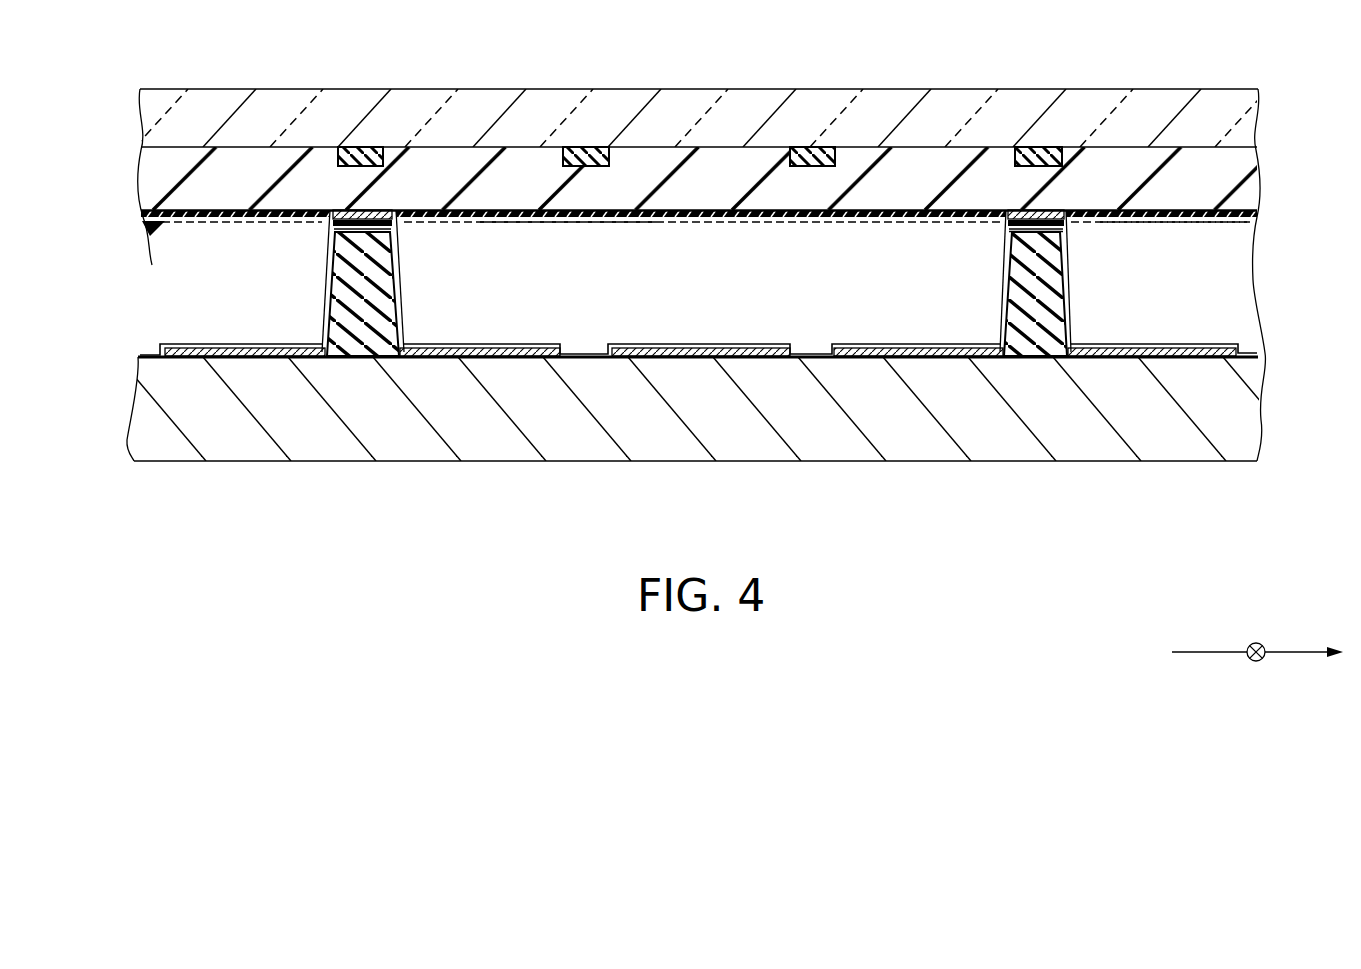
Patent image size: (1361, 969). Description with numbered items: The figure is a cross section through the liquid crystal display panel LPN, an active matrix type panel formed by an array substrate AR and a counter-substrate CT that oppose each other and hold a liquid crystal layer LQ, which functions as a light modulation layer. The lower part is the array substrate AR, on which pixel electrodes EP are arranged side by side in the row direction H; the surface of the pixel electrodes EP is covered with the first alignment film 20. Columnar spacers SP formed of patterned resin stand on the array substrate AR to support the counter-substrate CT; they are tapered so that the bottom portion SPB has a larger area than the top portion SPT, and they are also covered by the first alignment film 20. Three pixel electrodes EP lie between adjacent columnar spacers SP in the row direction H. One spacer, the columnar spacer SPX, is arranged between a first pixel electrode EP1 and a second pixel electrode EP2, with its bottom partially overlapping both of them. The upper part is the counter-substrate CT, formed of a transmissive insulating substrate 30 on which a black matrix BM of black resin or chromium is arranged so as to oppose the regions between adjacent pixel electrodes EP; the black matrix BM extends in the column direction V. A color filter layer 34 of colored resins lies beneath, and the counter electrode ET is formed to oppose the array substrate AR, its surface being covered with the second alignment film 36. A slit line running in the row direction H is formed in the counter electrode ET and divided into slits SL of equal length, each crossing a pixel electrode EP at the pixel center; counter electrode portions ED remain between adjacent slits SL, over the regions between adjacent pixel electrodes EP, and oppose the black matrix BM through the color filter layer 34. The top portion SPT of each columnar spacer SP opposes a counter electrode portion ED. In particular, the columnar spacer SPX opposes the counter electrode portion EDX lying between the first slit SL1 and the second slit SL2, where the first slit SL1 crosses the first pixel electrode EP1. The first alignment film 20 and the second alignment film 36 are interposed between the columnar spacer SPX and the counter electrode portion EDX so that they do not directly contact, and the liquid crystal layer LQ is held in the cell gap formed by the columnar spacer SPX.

The insulating substrate 30 is at (142, 113).
The color filter layer 34 is at (142, 175).
The second alignment film 36 is at (142, 213).
The first alignment film 20 is at (140, 357).
The black matrix BM is at (361, 148).
The top portion of columnar spacer SPT is at (1048, 228).
The bottom portion of columnar spacer SPB is at (1034, 359).
The counter-substrate CT is at (1266, 150).
The array substrate AR is at (1276, 405).
The counter electrode ET is at (148, 233).
The slit SL is at (218, 228).
The first slit SL1 is at (568, 226).
The second slit SL2 is at (1178, 224).
The pixel electrode EP is at (218, 346).
The first pixel electrode EP1 is at (857, 346).
The second pixel electrode EP2 is at (1213, 344).
The columnar spacer SP is at (343, 310).
The columnar spacer SPX is at (1058, 258).
The counter electrode portion ED is at (372, 231).
The counter electrode portion EDX is at (1003, 228).
The liquid crystal layer LQ is at (1250, 319).
The liquid crystal display panel LPN is at (163, 495).
The row direction H is at (1266, 653).
The column direction V is at (1256, 668).